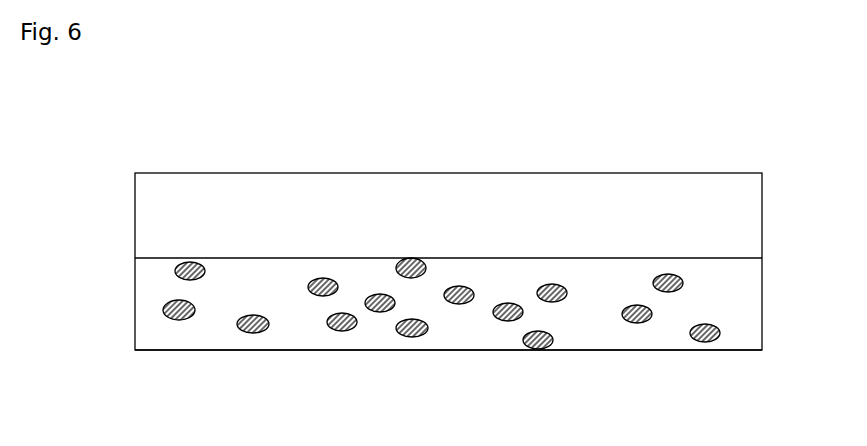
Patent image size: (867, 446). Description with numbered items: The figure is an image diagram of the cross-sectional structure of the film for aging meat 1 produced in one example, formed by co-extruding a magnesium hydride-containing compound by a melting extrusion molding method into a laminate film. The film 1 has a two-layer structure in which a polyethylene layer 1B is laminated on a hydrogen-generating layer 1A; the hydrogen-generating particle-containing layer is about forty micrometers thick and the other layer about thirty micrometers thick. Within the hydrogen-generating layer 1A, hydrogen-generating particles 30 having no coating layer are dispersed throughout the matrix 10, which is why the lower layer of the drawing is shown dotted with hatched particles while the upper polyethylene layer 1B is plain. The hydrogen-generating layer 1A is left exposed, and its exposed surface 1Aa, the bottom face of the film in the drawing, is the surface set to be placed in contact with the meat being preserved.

The film for aging meat 1 is at (135, 122).
The hydrogen-generating layer 1A is at (124, 270).
The polyethylene layer 1B is at (125, 173).
The exposed surface 1Aa is at (435, 350).
The matrix 10 is at (733, 300).
The hydrogen-generating particles 30 is at (567, 299).